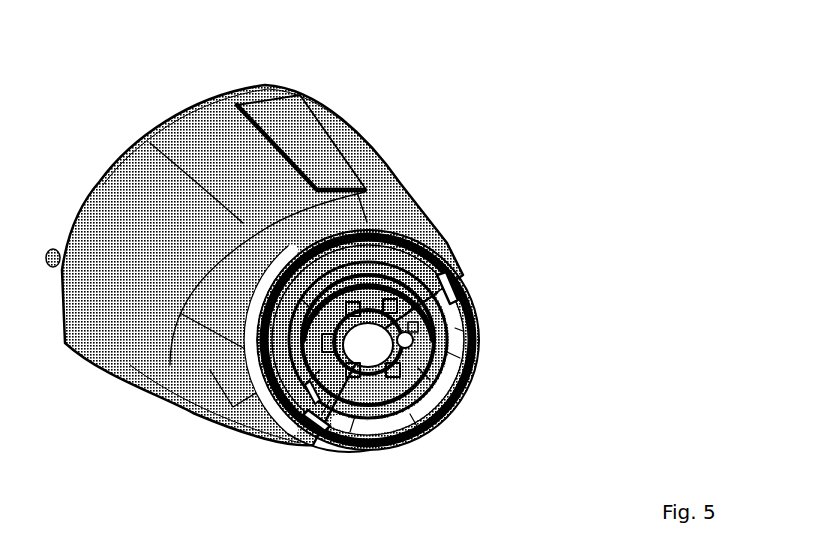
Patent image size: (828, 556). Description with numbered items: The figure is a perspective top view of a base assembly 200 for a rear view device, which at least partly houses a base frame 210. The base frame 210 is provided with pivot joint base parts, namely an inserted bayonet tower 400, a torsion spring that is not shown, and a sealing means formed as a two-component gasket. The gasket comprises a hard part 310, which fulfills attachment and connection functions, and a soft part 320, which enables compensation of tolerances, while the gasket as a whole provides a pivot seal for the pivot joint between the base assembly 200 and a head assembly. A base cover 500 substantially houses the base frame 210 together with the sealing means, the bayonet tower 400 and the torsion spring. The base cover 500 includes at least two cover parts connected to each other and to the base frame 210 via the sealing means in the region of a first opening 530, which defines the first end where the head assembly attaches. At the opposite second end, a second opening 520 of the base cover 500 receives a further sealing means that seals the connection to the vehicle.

The base assembly 200 is at (110, 127).
The base cover 500 is at (357, 147).
The second opening 520 is at (220, 97).
The first opening 530 is at (267, 393).
The hard part 310 is at (453, 243).
The soft part 320 is at (483, 332).
The base frame 210 is at (440, 326).
The bayonet tower 400 is at (333, 445).